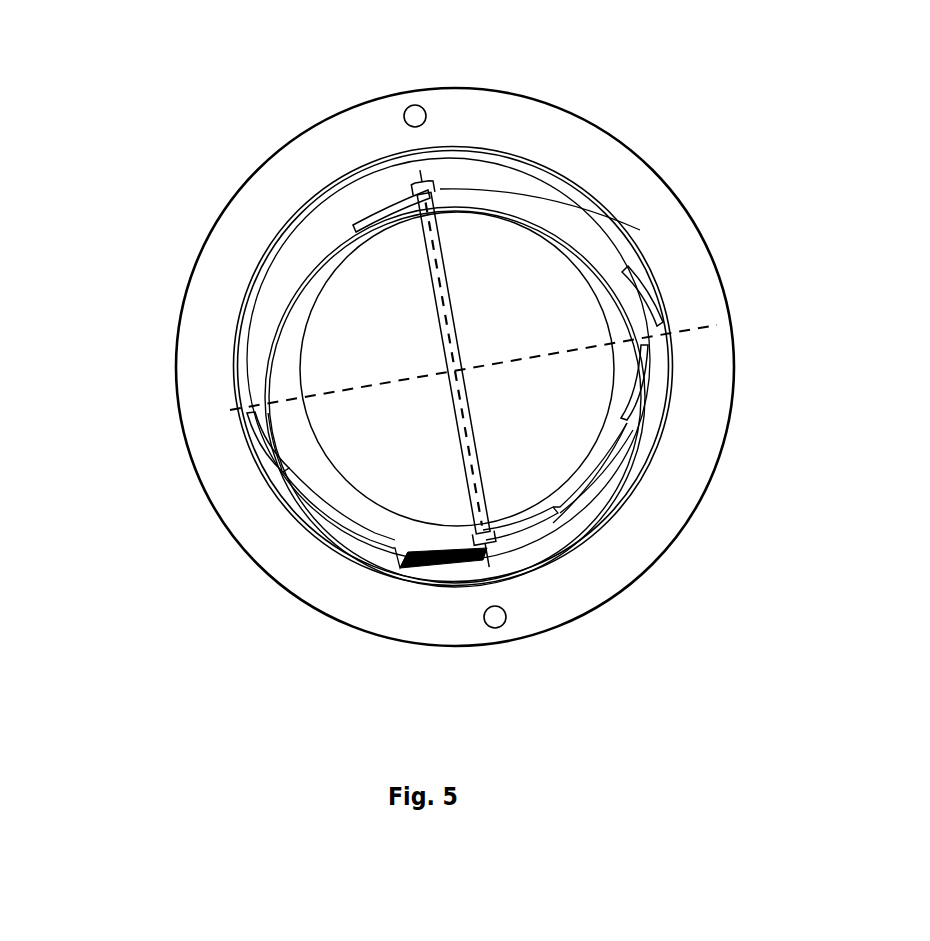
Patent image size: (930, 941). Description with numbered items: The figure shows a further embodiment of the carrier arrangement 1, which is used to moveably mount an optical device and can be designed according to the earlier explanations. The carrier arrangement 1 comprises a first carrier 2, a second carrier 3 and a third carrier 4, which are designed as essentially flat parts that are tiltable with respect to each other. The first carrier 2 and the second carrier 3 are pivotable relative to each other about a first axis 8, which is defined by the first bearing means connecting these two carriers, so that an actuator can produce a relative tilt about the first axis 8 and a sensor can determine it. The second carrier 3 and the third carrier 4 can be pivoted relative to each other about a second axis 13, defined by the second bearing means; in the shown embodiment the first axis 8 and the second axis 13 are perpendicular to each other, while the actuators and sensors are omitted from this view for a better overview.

The carrier arrangement 1 is at (76, 52).
The first carrier 2 is at (583, 302).
The second carrier 3 is at (562, 215).
The third carrier 4 is at (687, 217).
The first axis 8 is at (492, 562).
The second axis 13 is at (710, 330).